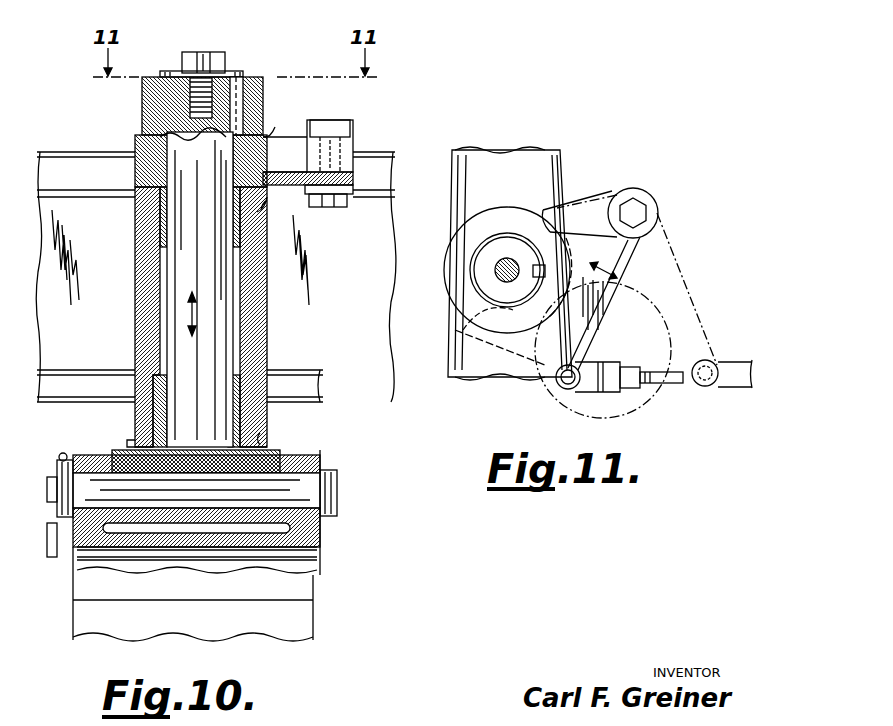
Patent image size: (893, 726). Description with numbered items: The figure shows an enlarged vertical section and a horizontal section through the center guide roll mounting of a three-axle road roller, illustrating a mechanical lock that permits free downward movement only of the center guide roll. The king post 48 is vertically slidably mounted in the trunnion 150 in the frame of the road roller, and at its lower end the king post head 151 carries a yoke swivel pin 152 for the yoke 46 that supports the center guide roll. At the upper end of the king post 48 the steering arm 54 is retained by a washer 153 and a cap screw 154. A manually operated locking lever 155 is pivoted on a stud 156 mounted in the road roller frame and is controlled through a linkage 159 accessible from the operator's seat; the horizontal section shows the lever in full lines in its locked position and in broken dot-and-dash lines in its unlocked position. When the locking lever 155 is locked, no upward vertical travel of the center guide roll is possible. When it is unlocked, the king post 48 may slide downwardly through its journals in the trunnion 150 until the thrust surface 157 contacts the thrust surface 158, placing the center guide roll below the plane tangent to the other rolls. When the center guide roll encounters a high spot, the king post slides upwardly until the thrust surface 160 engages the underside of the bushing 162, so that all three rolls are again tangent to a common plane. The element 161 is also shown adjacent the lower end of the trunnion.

In FIG. 10, the yoke 46 is at (307, 530).
In FIG. 10, the king post 48 is at (227, 273).
In FIG. 11, the king post 48 is at (507, 248).
In FIG. 10, the steering arm 54 is at (264, 92).
In FIG. 10, the trunnion 150 is at (135, 261).
In FIG. 11, the trunnion 150 is at (488, 208).
In FIG. 10, the king post head 151 is at (278, 451).
In FIG. 10, the yoke swivel pin 152 is at (306, 490).
In FIG. 10, the washer 153 is at (260, 54).
In FIG. 10, the cap screw 154 is at (207, 53).
In FIG. 10, the locking lever 155 is at (293, 150).
In FIG. 11, the locking lever 155 is at (593, 207).
In FIG. 10, the stud 156 is at (334, 207).
In FIG. 11, the stud 156 is at (643, 208).
In FIG. 10, the thrust surface 157 is at (270, 137).
In FIG. 10, the thrust surface 158 is at (264, 211).
In FIG. 11, the linkage 159 is at (670, 378).
In FIG. 10, the thrust surface 160 is at (127, 448).
In FIG. 10, the retaining ring 161 is at (262, 436).
In FIG. 10, the bushing 162 is at (230, 397).